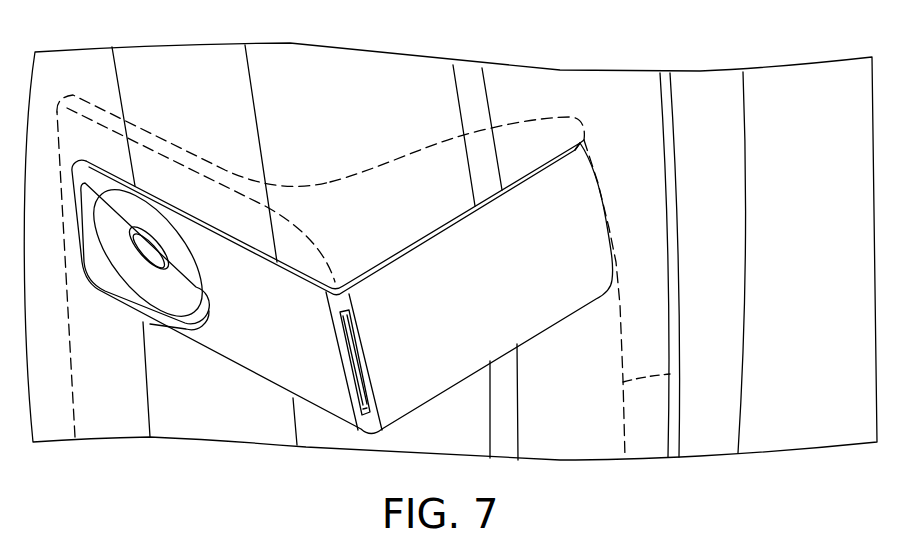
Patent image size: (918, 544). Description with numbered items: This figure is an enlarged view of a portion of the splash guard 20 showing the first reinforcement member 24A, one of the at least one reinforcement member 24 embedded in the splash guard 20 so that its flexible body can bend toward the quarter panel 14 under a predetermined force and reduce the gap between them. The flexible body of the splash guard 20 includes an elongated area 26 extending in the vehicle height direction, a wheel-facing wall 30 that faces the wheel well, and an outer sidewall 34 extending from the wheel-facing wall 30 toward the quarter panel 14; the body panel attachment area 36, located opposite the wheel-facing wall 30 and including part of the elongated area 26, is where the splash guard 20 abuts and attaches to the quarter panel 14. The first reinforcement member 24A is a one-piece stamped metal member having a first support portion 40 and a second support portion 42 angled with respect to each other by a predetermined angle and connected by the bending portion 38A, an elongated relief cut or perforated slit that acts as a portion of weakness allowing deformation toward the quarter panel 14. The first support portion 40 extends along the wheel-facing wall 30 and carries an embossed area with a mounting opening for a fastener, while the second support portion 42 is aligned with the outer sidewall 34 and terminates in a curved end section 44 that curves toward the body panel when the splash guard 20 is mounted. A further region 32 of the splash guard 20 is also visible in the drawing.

The quarter panel 14 is at (322, 87).
The splash guard 20 is at (547, 60).
The reinforcement member 24 is at (385, 133).
The first reinforcement member 24A is at (610, 209).
The elongated area 26 is at (668, 374).
The wheel-facing wall 30 is at (115, 405).
The second band portion 32 is at (573, 425).
The outer sidewall 34 is at (162, 135).
The body panel attachment area 36 is at (214, 150).
The bending portion 38A is at (356, 399).
The first support portion 40 is at (222, 363).
The second support portion 42 is at (588, 302).
The curved end section 44 is at (565, 155).